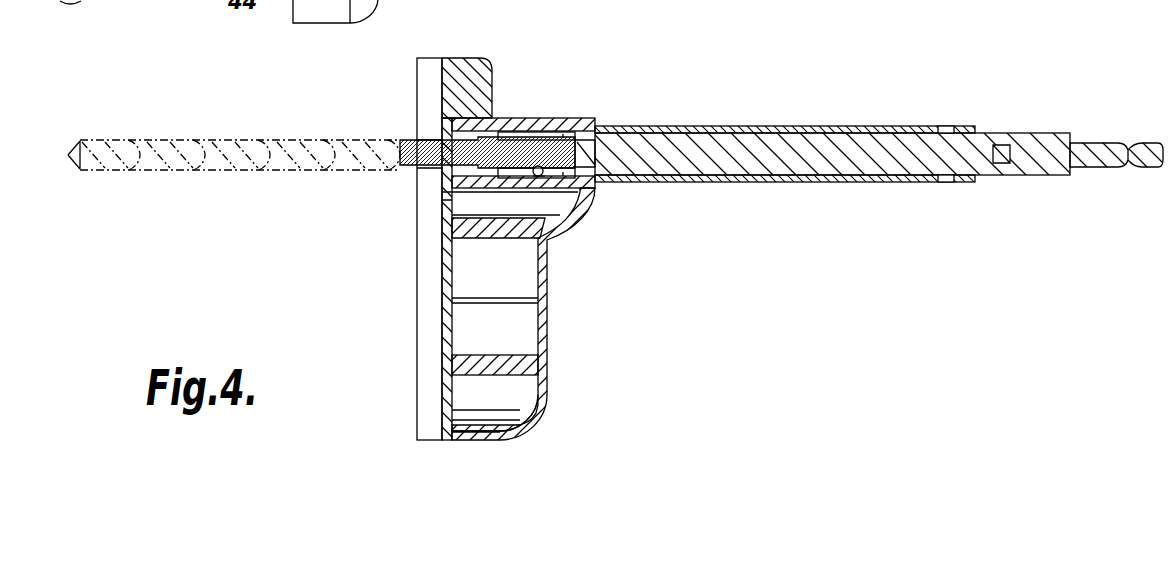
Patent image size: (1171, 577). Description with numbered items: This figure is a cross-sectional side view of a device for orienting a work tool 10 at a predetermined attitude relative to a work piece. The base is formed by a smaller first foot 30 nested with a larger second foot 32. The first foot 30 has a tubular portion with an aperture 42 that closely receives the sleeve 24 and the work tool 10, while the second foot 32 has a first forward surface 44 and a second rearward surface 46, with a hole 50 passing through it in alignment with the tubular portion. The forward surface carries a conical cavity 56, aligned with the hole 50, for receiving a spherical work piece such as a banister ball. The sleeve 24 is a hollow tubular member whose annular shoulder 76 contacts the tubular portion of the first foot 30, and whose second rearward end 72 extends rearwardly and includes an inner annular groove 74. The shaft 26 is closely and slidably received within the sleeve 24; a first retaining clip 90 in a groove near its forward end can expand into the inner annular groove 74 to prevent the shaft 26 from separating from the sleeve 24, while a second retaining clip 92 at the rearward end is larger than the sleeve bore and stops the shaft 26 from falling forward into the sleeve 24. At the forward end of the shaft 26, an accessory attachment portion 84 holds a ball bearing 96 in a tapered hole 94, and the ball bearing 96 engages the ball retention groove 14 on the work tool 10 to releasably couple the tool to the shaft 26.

The work tool 10 is at (255, 135).
The ball retention groove 14 is at (538, 135).
The sleeve 24 is at (748, 183).
The shaft 26 is at (786, 170).
The first foot 30 is at (471, 243).
The second foot 32 is at (459, 58).
The aperture 42 is at (452, 255).
The first forward surface 44 is at (420, 335).
The second rearward surface 46 is at (455, 440).
The hole 50 is at (443, 192).
The conical cavity 56 is at (427, 180).
The second rearward end 72 is at (975, 182).
The inner annular groove 74 is at (940, 126).
The annular shoulder 76 is at (588, 118).
The accessory attachment portion 84 is at (567, 172).
The first retaining clip 90 is at (564, 133).
The second retaining clip 92 is at (1057, 176).
The tapered hole 94 is at (543, 176).
The ball bearing 96 is at (550, 180).